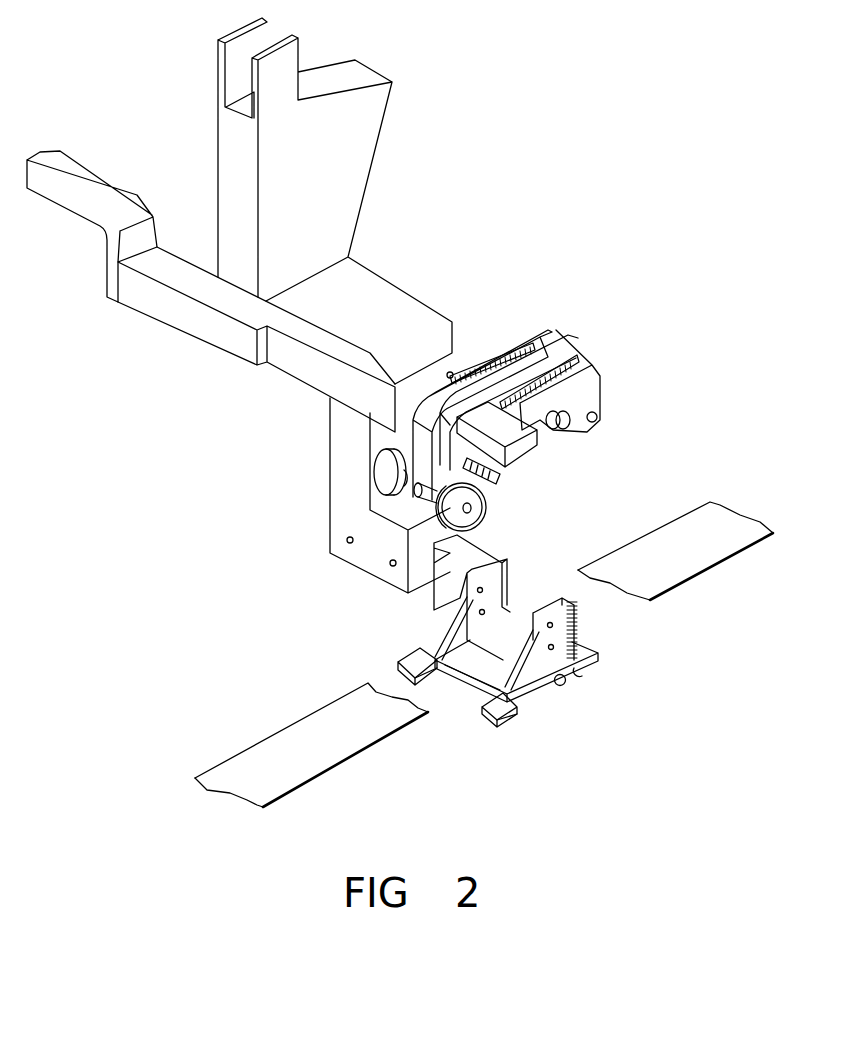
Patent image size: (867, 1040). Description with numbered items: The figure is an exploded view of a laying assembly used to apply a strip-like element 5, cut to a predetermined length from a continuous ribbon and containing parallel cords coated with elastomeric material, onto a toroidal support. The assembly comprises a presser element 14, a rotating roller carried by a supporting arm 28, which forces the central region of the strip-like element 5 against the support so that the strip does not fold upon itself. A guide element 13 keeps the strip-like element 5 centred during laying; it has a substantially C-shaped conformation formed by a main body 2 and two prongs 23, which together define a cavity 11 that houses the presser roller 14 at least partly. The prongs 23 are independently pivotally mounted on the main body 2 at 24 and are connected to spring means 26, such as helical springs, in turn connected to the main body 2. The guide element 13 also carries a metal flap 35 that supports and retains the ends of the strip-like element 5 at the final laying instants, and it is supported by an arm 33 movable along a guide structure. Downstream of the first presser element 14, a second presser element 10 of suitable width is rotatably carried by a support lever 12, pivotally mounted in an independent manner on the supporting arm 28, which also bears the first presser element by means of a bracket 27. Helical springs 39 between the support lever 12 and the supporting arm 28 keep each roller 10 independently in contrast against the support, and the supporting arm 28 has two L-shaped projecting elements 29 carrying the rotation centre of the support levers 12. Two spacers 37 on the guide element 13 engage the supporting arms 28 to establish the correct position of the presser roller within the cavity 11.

The main body 2 is at (510, 627).
The strip-like element 5 is at (260, 768).
The second presser element 10 is at (380, 477).
The cavity 11 is at (410, 683).
The support lever 12 is at (563, 350).
The guide element 13 is at (615, 667).
The presser element 14 is at (490, 487).
The prongs 23 is at (407, 647).
The pivot 24 is at (577, 683).
The spring means 26 is at (577, 628).
The bracket 27 is at (487, 468).
The supporting arm 28 is at (177, 310).
The projecting elements 29 is at (590, 388).
The arm 33 is at (347, 133).
The metal flap 35 is at (463, 705).
The spacers 37 is at (598, 420).
The helical springs 39 is at (492, 348).